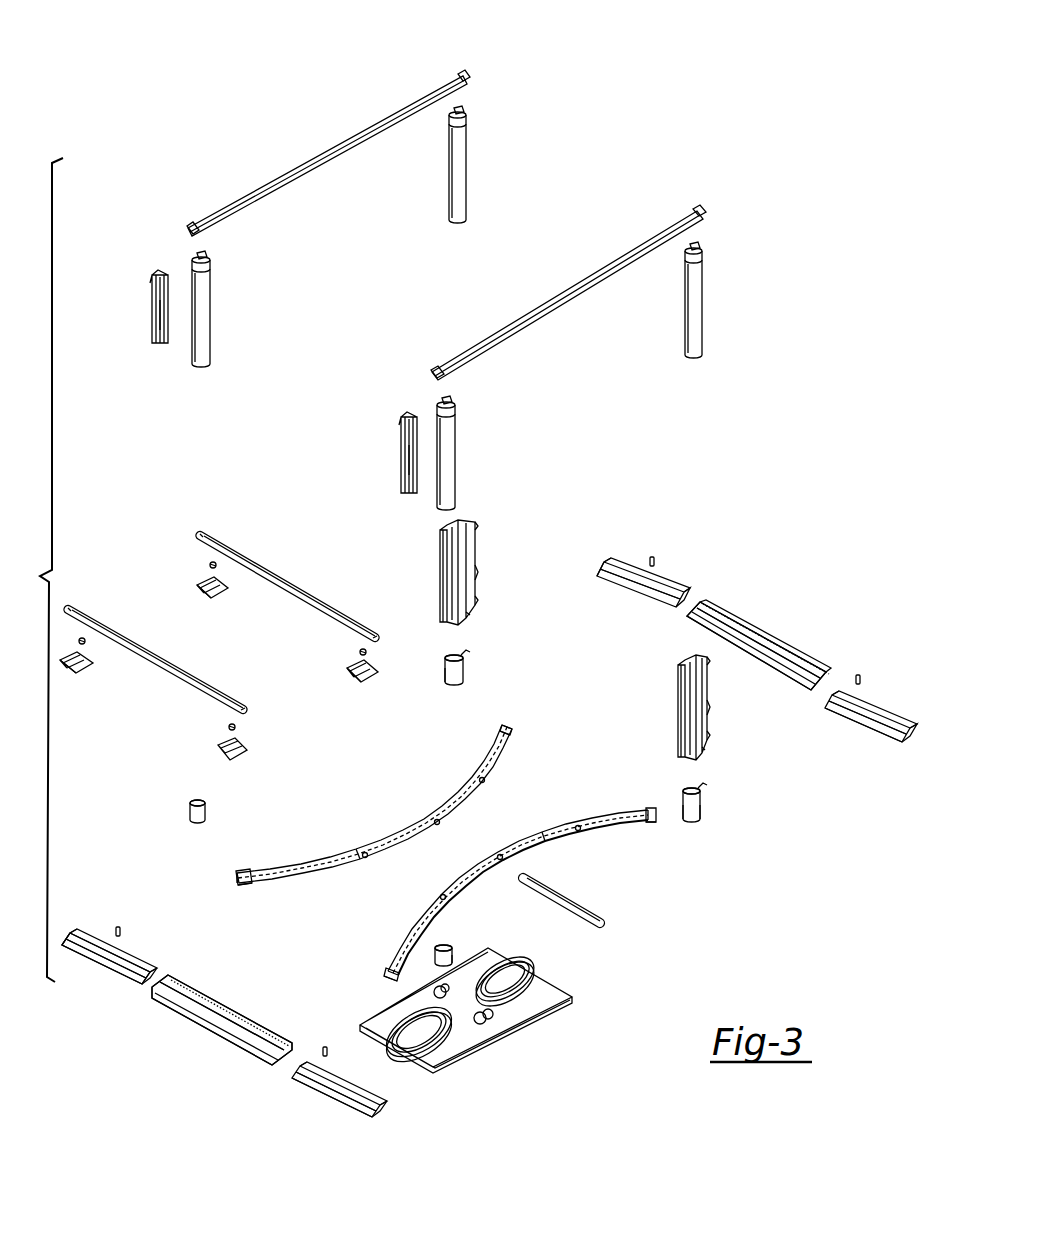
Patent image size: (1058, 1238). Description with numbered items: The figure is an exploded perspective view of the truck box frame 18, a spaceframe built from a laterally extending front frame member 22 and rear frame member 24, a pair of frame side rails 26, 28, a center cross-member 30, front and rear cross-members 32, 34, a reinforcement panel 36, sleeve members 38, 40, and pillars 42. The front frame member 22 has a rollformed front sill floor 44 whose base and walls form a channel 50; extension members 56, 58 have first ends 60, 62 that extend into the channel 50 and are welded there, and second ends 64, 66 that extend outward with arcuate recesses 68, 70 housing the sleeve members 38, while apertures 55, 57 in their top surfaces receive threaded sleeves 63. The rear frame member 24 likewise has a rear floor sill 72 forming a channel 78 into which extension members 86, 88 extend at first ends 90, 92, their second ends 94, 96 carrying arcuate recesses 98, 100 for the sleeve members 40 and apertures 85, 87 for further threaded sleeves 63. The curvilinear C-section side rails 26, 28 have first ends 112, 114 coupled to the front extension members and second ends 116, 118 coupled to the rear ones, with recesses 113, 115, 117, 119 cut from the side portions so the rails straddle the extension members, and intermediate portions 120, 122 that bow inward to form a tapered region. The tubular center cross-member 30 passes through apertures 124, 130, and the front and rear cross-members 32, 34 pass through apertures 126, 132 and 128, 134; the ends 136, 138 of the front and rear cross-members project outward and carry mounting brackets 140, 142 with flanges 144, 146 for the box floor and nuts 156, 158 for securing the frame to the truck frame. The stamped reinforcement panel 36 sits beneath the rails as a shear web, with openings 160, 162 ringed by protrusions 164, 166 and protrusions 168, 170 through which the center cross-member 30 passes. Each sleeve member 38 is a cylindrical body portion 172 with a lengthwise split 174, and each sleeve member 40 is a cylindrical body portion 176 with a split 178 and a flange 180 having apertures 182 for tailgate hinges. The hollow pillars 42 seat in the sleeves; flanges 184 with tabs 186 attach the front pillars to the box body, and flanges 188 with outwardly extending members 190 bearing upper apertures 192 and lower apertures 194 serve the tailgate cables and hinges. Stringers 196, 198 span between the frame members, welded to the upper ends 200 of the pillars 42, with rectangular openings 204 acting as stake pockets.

The truck box frame 18 is at (136, 1020).
The front frame member 22 is at (206, 1068).
The rear frame member 24 is at (747, 566).
The frame side rail 26 is at (472, 873).
The frame side rail 28 is at (440, 808).
The center cross-member 30 is at (566, 899).
The front cross-member 32 is at (150, 655).
The rear cross-member 34 is at (280, 575).
The reinforcement panel 36 is at (550, 1000).
The sleeve member 38 is at (190, 818).
The sleeve member 40 is at (452, 686).
The pillar 42 is at (457, 180).
The front sill floor 44 is at (205, 1018).
The channel 50 is at (228, 1025).
The aperture 55 is at (320, 1080).
The extension member 56 is at (345, 1090).
The aperture 57 is at (117, 958).
The extension member 58 is at (100, 942).
The first end 60 is at (308, 1068).
The first end 62 is at (133, 968).
The threaded sleeve 63 is at (653, 556).
The second end 64 is at (360, 1104).
The second end 66 is at (85, 945).
The arcuate recess 68 is at (372, 1105).
The arcuate recess 70 is at (79, 935).
The rear floor sill 72 is at (748, 625).
The channel 78 is at (768, 660).
The aperture 85 is at (860, 710).
The extension member 86 is at (878, 718).
The aperture 87 is at (653, 589).
The extension member 88 is at (634, 575).
The first end 90 is at (846, 697).
The first end 92 is at (673, 596).
The second end 94 is at (882, 735).
The second end 96 is at (611, 568).
The arcuate recess 98 is at (906, 731).
The arcuate recess 100 is at (613, 562).
The first end 112 is at (392, 968).
The recess 113 is at (386, 976).
The first end 114 is at (246, 870).
The recess 115 is at (237, 880).
The second end 116 is at (648, 808).
The recess 117 is at (648, 826).
The second end 118 is at (505, 724).
The recess 119 is at (510, 735).
The intermediate portion 120 is at (548, 830).
The intermediate portion 122 is at (370, 848).
The aperture 124 is at (501, 855).
The aperture 126 is at (443, 895).
The aperture 128 is at (580, 827).
The aperture 130 is at (440, 823).
The aperture 132 is at (365, 858).
The aperture 134 is at (485, 781).
The end 136 is at (70, 608).
The end 138 is at (202, 533).
The mounting bracket 140 is at (78, 690).
The mounting bracket 142 is at (207, 602).
The flange 144 is at (93, 662).
The flange 146 is at (200, 583).
The nut 156 is at (84, 638).
The nut 158 is at (210, 564).
The opening 160 is at (420, 1040).
The opening 162 is at (500, 965).
The protrusion 164 is at (450, 1034).
The protrusion 166 is at (530, 985).
The protrusion 168 is at (490, 1020).
The protrusion 170 is at (440, 988).
The cylindrical body portion 172 is at (190, 808).
The split 174 is at (452, 965).
The cylindrical body portion 176 is at (446, 678).
The split 178 is at (690, 824).
The flange 180 is at (464, 670).
The aperture 182 is at (464, 655).
The flange 184 is at (155, 325).
The tab 186 is at (160, 300).
The flange 188 is at (443, 560).
The outwardly extending member 190 is at (474, 577).
The upper aperture 192 is at (474, 540).
The lower aperture 194 is at (472, 614).
The stringer 196 is at (572, 290).
The stringer 198 is at (325, 160).
The upper end 200 is at (461, 112).
The rectangular opening 204 is at (198, 228).